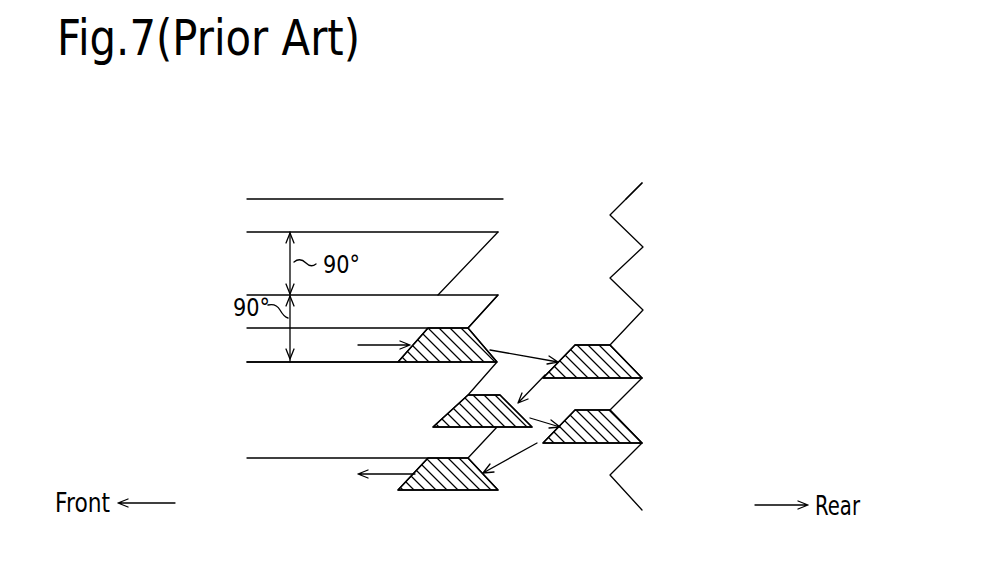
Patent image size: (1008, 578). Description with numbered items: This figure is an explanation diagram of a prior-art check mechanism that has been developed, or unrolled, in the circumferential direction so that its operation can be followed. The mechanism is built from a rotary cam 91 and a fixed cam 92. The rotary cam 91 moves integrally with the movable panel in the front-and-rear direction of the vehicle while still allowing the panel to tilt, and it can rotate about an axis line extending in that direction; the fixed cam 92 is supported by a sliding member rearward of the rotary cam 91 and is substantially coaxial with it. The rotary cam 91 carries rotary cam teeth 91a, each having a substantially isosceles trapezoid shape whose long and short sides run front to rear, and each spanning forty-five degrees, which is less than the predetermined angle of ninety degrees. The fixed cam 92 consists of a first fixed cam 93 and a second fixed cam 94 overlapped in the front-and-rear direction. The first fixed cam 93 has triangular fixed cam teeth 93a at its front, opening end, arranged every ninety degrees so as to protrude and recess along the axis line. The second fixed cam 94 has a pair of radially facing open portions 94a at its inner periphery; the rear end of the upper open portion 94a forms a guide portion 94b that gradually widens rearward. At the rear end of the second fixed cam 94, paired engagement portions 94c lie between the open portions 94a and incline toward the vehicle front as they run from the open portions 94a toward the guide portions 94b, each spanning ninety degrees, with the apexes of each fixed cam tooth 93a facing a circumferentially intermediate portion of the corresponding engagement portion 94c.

The fixed cam 92 is at (600, 135).
The first fixed cam 93 is at (579, 183).
The fixed cam teeth 93a is at (642, 185).
The second fixed cam 94 is at (512, 179).
The open portions 94a is at (327, 463).
The guide portion 94b is at (485, 311).
The engagement portions 94c is at (471, 263).
The rotary cam 91 is at (467, 493).
The rotary cam teeth 91a is at (625, 357).